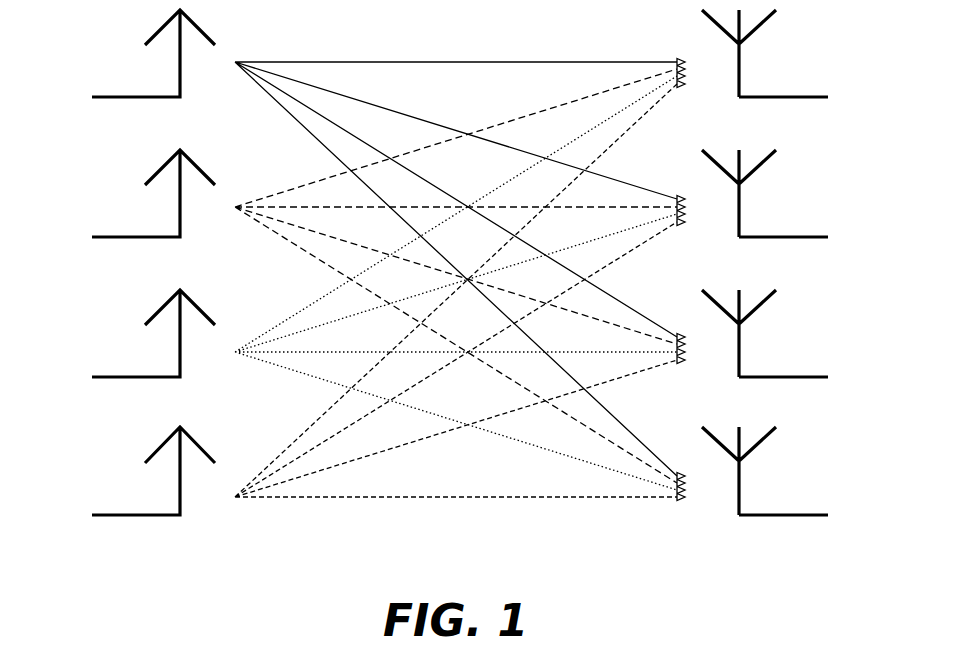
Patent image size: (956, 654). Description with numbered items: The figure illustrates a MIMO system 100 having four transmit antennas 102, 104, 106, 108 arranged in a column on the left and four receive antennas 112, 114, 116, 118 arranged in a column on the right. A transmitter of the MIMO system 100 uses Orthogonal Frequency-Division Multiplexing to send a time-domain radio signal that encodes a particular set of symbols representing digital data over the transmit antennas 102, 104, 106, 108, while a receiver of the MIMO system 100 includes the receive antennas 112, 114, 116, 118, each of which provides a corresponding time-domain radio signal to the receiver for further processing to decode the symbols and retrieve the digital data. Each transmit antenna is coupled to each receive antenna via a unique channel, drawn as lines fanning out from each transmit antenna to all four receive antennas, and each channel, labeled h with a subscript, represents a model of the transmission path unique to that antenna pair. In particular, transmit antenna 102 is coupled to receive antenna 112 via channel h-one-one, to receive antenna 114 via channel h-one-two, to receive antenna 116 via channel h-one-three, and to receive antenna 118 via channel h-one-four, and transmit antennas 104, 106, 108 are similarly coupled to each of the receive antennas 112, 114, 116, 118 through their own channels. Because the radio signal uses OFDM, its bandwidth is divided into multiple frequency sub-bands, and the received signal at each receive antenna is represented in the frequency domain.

The MIMO system 100 is at (78, 613).
The transmit antenna 102 is at (110, 96).
The transmit antenna 104 is at (110, 236).
The transmit antenna 106 is at (110, 376).
The transmit antenna 108 is at (110, 514).
The receive antenna 112 is at (807, 96).
The receive antenna 114 is at (807, 236).
The receive antenna 116 is at (807, 376).
The receive antenna 118 is at (807, 514).